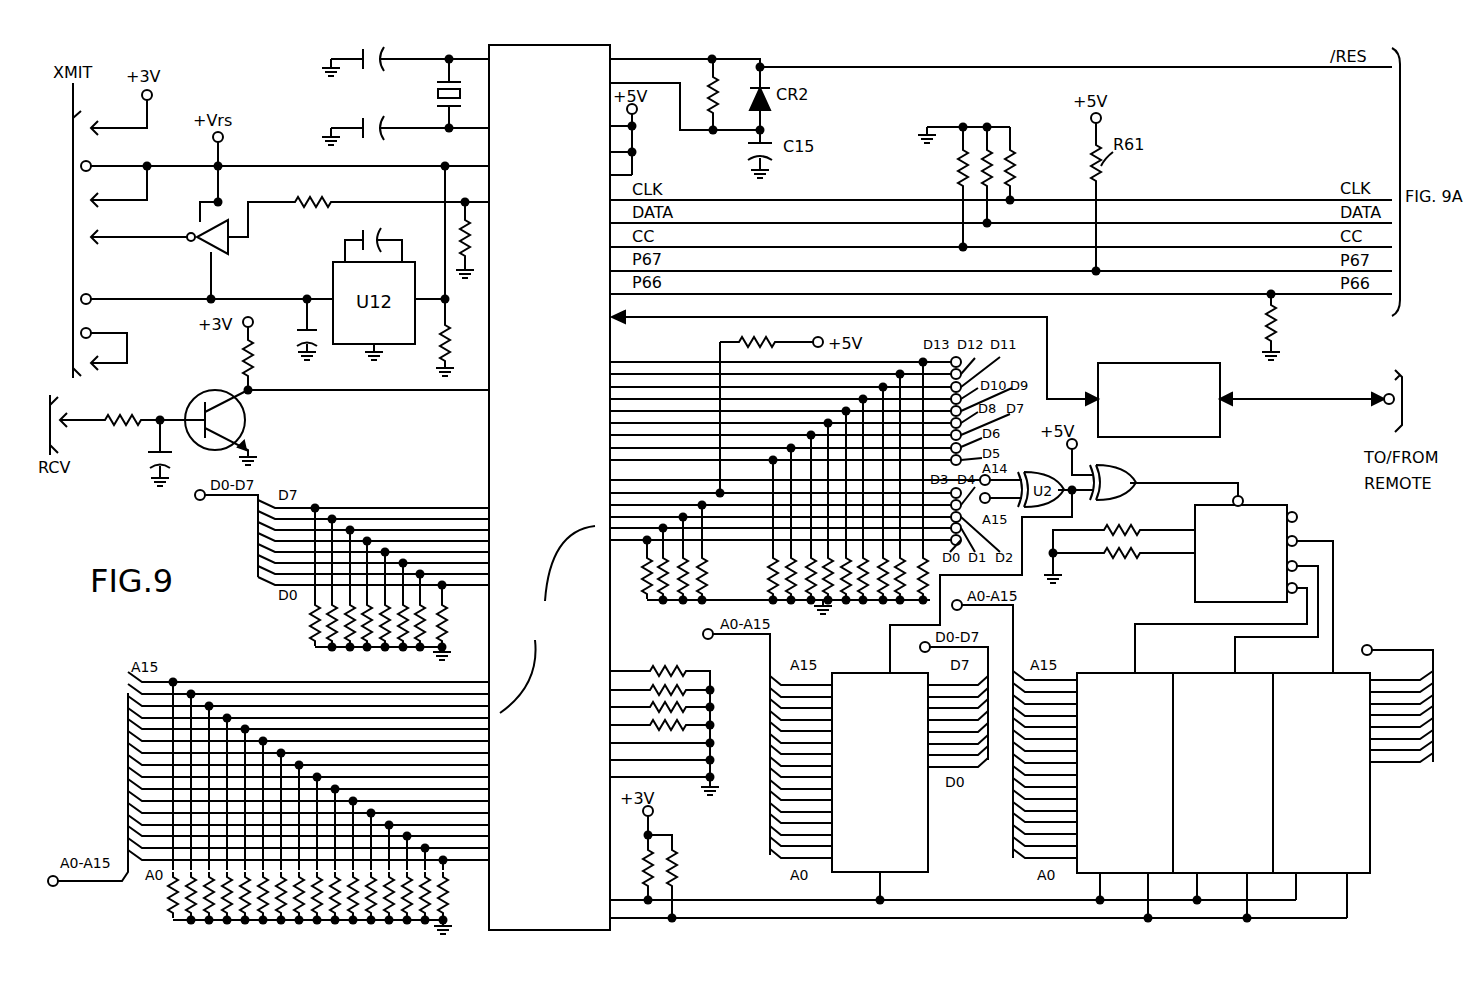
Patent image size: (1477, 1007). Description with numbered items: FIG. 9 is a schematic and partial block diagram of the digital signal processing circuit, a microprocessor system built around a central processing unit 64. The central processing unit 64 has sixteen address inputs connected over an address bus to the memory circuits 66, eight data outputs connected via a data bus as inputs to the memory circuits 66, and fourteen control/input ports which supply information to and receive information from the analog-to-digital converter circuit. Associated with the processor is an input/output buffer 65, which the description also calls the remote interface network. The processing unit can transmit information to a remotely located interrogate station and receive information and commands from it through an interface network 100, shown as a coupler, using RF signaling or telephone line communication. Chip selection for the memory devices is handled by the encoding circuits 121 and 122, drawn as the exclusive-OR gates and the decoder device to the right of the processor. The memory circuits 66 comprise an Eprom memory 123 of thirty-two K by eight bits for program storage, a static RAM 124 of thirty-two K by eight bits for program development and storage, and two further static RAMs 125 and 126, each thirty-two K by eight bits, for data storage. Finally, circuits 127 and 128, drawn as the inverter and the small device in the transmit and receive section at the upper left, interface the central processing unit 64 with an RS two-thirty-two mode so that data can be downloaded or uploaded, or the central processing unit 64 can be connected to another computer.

The central processing unit 64 is at (489, 440).
The input/output buffer 65 is at (547, 619).
The memory circuits 66 is at (1352, 632).
The interface network 100 is at (1129, 363).
The circuit U2 121 is at (1121, 472).
The circuit U10 122 is at (1252, 506).
The Eprom memory 123 is at (866, 823).
The static RAM 124 is at (1113, 823).
The static RAM 125 is at (1208, 823).
The static RAM 126 is at (1304, 823).
The circuit U7 127 is at (228, 252).
The circuit U12 128 is at (333, 262).